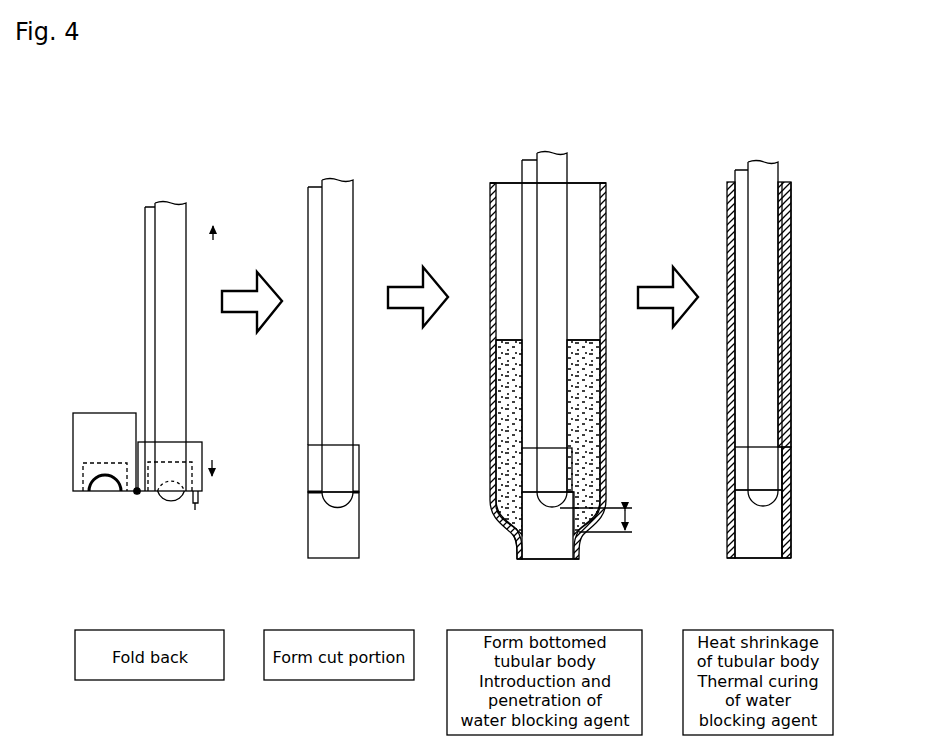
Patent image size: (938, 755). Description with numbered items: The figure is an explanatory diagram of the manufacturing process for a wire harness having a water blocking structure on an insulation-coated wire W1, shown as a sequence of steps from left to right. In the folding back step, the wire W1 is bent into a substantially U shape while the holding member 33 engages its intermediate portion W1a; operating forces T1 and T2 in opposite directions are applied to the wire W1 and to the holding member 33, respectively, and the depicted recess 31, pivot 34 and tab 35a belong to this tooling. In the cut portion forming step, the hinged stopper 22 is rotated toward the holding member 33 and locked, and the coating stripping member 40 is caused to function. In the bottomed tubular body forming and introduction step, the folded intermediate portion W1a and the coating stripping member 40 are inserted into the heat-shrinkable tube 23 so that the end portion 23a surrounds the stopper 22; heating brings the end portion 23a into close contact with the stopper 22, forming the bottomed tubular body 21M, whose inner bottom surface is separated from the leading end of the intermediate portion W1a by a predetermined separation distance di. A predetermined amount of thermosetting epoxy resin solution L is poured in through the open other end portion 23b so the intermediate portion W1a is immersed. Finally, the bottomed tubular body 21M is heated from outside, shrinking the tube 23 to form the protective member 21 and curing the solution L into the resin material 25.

The insulation-coated wire W1 is at (148, 281).
The intermediate portion of the insulation-coated wire W1a is at (171, 502).
The stopper 22 is at (100, 413).
The holding member 33 is at (203, 446).
The forming recess 31 is at (95, 492).
The fulcrum / pivot point 34 is at (137, 494).
The cutter blade 35a is at (199, 508).
The operating force T1 is at (216, 231).
The operating force T2 is at (215, 474).
The coating stripping member 40 is at (369, 450).
The heat-shrinkable tube 23 is at (606, 382).
The other end portion of the heat-shrinkable tube 23b is at (606, 208).
The end portion of the heat-shrinkable tube 23a is at (583, 542).
The bottomed tubular body 21M is at (512, 550).
The thermosetting epoxy resin solution L is at (584, 337).
The separation distance di is at (603, 520).
The protective member 21 is at (797, 324).
The resin material 25 is at (791, 400).